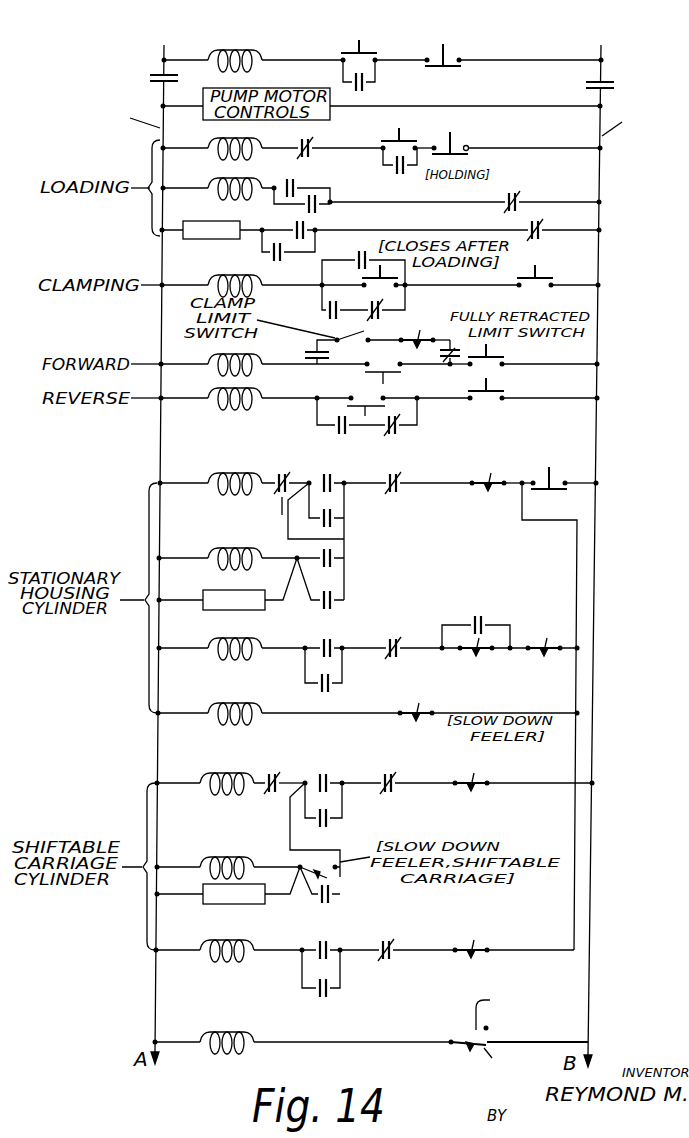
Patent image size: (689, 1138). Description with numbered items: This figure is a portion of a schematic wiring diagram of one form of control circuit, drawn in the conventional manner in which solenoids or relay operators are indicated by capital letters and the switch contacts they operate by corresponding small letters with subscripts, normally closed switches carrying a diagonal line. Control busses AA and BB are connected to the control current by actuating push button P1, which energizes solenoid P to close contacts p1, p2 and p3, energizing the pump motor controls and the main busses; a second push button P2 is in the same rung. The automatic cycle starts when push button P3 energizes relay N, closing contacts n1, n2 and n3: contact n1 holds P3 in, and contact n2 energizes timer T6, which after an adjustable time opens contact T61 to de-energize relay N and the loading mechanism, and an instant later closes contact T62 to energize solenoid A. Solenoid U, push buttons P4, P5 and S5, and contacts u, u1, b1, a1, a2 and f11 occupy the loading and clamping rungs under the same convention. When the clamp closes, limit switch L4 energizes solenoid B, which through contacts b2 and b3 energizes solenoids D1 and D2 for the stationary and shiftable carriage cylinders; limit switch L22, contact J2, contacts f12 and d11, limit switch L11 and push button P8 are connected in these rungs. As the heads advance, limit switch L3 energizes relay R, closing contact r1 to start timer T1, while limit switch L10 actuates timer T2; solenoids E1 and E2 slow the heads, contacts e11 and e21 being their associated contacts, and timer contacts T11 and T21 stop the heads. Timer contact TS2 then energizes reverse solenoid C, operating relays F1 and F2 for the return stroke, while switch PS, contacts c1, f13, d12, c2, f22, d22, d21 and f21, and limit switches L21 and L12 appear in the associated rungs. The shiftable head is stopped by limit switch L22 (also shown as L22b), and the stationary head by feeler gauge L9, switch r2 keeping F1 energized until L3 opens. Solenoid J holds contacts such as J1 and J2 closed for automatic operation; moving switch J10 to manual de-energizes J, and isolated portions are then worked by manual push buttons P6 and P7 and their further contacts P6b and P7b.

The control bus AA is at (125, 116).
The control bus BB is at (628, 122).
The solenoid P is at (253, 45).
The push button P1 is at (384, 35).
The pump stop push button P2 is at (513, 42).
The contact p1 is at (362, 81).
The contact p2 is at (172, 84).
The contact p3 is at (608, 90).
The relay N is at (230, 137).
The timer contact T61 is at (312, 143).
The push button P3 is at (408, 132).
The loading stop push button P4 is at (456, 132).
The contact n1 is at (403, 167).
The relay coil U is at (225, 182).
The contact n3 is at (302, 184).
The relay U contact u is at (389, 197).
The relay U contact u1 is at (288, 252).
The relay B contact b1 is at (553, 196).
The timer T6 is at (212, 219).
The contact n2 is at (396, 224).
The contact J1 is at (564, 237).
The solenoid A is at (242, 278).
The timer contact T62 is at (363, 260).
The clamp push button P5 is at (421, 276).
The relay A contact a1 is at (359, 309).
The relay F1 contact f11 is at (384, 315).
The switch S5 is at (558, 272).
The relay A contact a2 is at (312, 352).
The limit switch L4 is at (363, 334).
The limit switch L22 is at (425, 330).
The contact J2 is at (457, 352).
The solenoid B is at (250, 360).
The push button P6 is at (412, 379).
The push button P7 is at (533, 368).
The push button P7b is at (368, 412).
The reverse solenoid C is at (240, 407).
The timer contact TS2 is at (366, 425).
The pressure switch PS is at (401, 430).
The push button P6b is at (507, 401).
The solenoid D1 is at (244, 477).
The timer contact T11 is at (290, 483).
The contact b2 is at (356, 476).
The relay D1 contact d11 is at (322, 541).
The relay F1 contact f12 is at (428, 473).
The limit switch L11 is at (497, 472).
The push button P8 is at (559, 470).
The solenoid E1 is at (242, 554).
The contact r1 is at (321, 555).
The timer T1 is at (198, 596).
The relay E1 contact e11 is at (338, 606).
The relay F1 is at (242, 644).
The relay C contact c1 is at (349, 644).
The relay F1 contact f13 is at (329, 677).
The relay D1 contact d12 is at (412, 639).
The switch contact r2 is at (476, 627).
The feeler gauge L9 is at (477, 657).
The limit switch L21 is at (543, 638).
The relay R is at (230, 710).
The slow down feeler L3 is at (488, 720).
The solenoid D2 is at (234, 777).
The timer contact T21 is at (284, 773).
The contact b3 is at (352, 774).
The relay D2 contact d21 is at (316, 830).
The relay F2 contact f21 is at (417, 773).
The limit switch L12 is at (523, 772).
The solenoid E2 is at (234, 861).
The limit switch L10 is at (320, 861).
The timer T2 is at (248, 885).
The relay E2 contact e21 is at (331, 901).
The relay F2 is at (234, 944).
The relay C contact c2 is at (341, 945).
The relay F2 contact f22 is at (333, 980).
The relay D2 contact d22 is at (416, 940).
The limit switch L22b is at (514, 938).
The solenoid J is at (238, 1038).
The switch J10 is at (519, 1027).